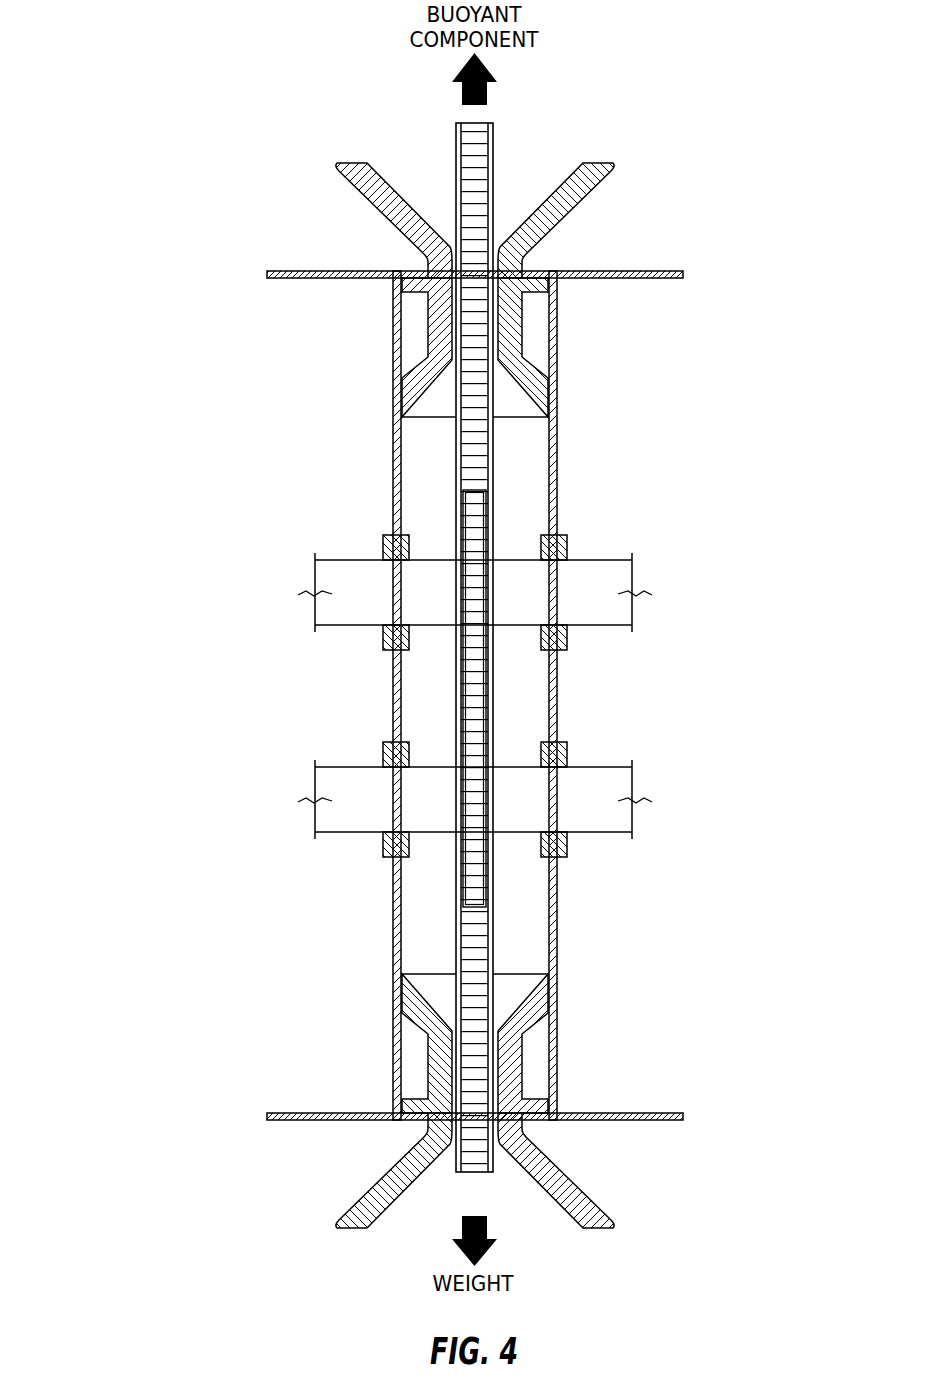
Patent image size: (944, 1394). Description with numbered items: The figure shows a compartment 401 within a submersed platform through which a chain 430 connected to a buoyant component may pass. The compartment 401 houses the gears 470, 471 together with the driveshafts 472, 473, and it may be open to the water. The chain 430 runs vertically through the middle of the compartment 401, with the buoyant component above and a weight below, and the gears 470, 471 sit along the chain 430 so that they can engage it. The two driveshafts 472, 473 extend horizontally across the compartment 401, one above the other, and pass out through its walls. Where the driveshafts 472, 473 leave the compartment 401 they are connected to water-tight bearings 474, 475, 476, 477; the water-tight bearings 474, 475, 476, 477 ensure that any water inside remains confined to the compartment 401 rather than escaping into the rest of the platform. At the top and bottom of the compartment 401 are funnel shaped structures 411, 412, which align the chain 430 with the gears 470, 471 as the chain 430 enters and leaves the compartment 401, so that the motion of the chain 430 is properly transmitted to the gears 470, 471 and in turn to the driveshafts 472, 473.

The compartment 401 is at (417, 447).
The funnel shaped structure 411 is at (393, 164).
The funnel shaped structure 412 is at (408, 1224).
The chain 430 is at (493, 143).
The gear 470 is at (480, 498).
The gear 471 is at (492, 718).
The driveshaft 472 is at (342, 562).
The driveshaft 473 is at (335, 770).
The water-tight bearing 474 is at (382, 546).
The water-tight bearing 475 is at (383, 752).
The water-tight bearing 476 is at (567, 752).
The water-tight bearing 477 is at (567, 544).